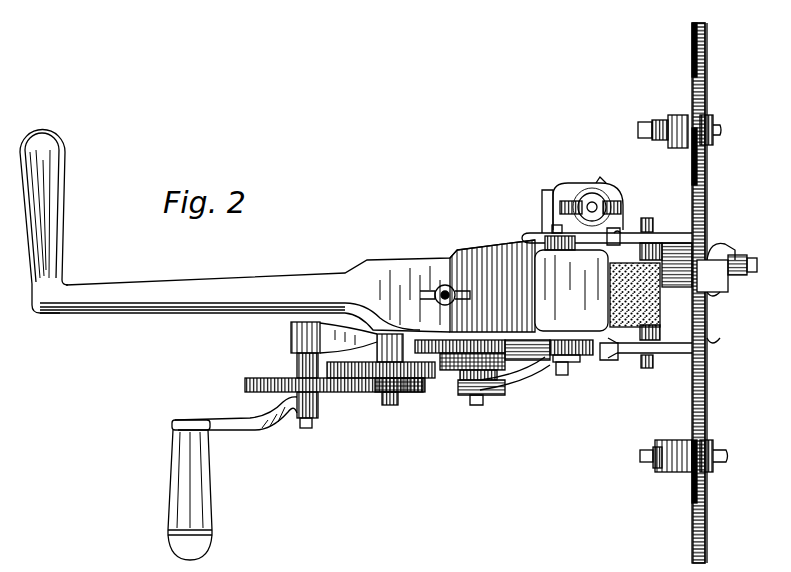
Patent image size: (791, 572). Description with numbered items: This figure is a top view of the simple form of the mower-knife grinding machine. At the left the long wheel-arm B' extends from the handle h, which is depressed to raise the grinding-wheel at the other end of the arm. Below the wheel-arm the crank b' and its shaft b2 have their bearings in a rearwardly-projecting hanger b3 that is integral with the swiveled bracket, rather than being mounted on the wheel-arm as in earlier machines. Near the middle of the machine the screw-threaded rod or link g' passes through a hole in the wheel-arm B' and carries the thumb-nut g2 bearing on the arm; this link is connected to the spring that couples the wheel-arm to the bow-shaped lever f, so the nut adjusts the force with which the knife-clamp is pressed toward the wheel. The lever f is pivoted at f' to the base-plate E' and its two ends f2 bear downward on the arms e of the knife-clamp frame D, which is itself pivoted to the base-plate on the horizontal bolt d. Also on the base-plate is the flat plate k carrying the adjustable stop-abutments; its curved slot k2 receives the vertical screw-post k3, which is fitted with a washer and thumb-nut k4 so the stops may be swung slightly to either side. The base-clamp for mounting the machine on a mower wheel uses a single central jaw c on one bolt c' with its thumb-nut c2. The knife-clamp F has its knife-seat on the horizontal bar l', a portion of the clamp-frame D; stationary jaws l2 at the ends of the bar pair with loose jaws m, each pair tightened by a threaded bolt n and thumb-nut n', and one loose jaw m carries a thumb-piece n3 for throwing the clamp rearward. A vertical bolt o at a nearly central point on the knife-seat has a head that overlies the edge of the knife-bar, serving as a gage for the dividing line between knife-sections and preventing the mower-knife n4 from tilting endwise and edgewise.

The handle h is at (44, 222).
The wheel-arm B' is at (287, 286).
The body A is at (562, 286).
The screw-threaded rod or link g' is at (447, 284).
The thumb-nut g2 is at (428, 305).
The bow-shaped lever f is at (602, 238).
The pivot of bow-lever f' is at (542, 216).
The ends of bow-lever f2 is at (590, 375).
The base-plate E' is at (569, 202).
The flat plate k is at (592, 193).
The curved slot k2 is at (570, 199).
The vertical screw-post k3 is at (596, 203).
The thumb-nut k4 is at (618, 204).
The horizontal pivot bolt d is at (647, 295).
The arms of clamp-frame e is at (603, 372).
The knife-clamp frame D is at (650, 300).
The horizontal bar l' is at (709, 293).
The mower-knife n4 is at (695, 22).
The knife-clamp F is at (723, 148).
The vertical bolt o is at (712, 276).
The thumb-nut c2 is at (738, 257).
The bolt c' is at (760, 261).
The central jaw c is at (721, 283).
The loose jaw m is at (673, 285).
The thumb-nut n' is at (649, 286).
The threaded bolt n is at (631, 307).
The thumb-piece n3 is at (680, 462).
The stationary jaw l2 is at (712, 112).
The hanger b3 is at (323, 375).
The crank-shaft b2 is at (419, 369).
The crank b' is at (232, 478).